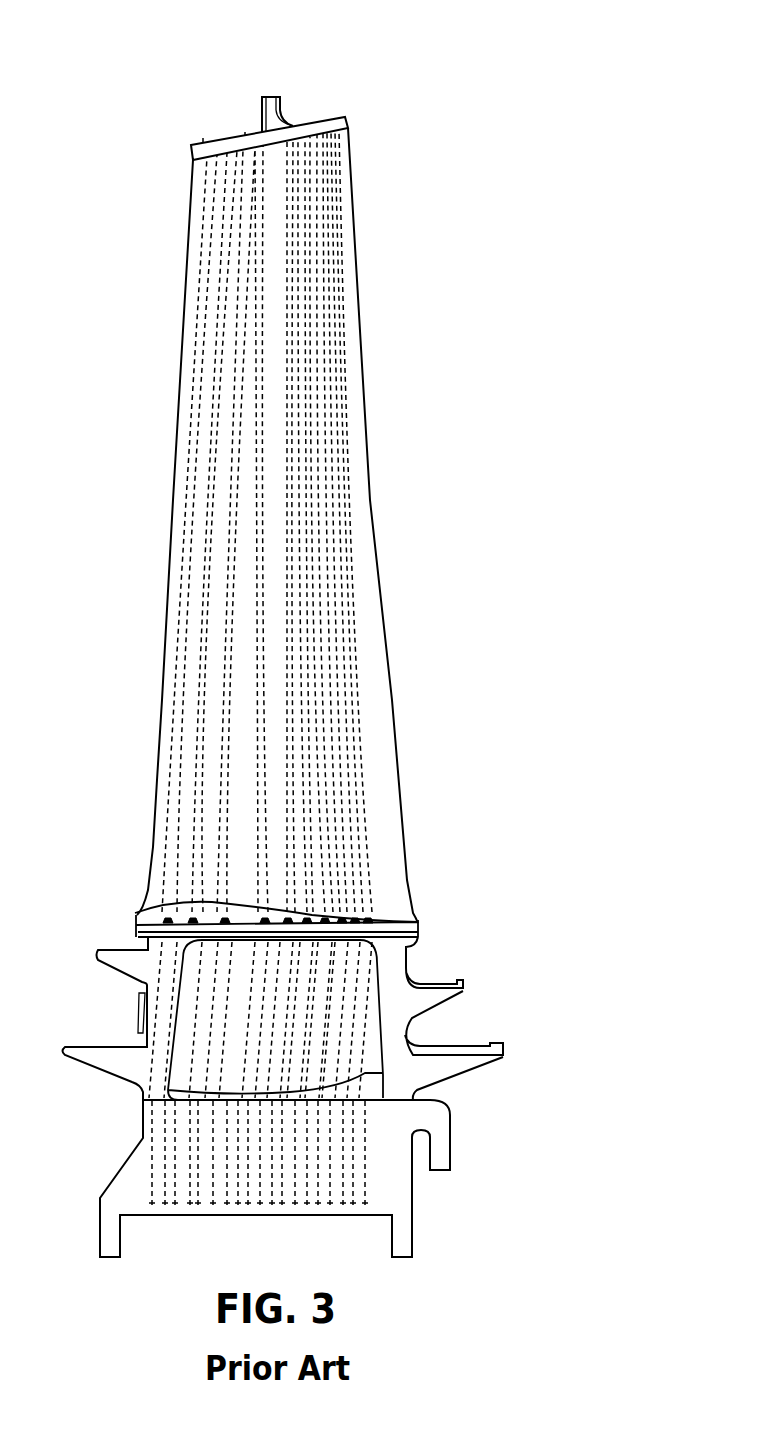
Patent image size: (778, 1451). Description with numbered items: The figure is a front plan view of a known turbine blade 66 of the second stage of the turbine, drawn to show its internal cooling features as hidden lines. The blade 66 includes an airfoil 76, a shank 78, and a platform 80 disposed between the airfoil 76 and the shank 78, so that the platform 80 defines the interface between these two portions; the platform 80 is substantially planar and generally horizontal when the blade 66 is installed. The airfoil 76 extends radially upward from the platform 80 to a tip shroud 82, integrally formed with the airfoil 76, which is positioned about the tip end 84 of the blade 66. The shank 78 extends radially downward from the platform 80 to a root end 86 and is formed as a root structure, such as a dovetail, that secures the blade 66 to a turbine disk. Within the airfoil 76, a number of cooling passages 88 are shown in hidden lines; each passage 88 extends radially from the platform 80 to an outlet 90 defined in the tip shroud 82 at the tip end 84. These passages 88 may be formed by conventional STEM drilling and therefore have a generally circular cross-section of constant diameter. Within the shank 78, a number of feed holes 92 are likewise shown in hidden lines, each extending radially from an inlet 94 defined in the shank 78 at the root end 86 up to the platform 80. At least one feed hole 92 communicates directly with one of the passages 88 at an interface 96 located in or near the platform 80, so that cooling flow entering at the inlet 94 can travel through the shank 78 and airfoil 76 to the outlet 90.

The blade 66 is at (152, 60).
The airfoil 76 is at (388, 657).
The shank 78 is at (408, 1033).
The platform 80 is at (135, 915).
The tip shroud 82 is at (350, 122).
The tip end 84 is at (333, 85).
The root end 86 is at (380, 1272).
The cooling passages 88 is at (183, 583).
The outlet 90 is at (245, 135).
The feed holes 92 is at (152, 1178).
The inlet 94 is at (165, 1215).
The interface 96 is at (224, 918).